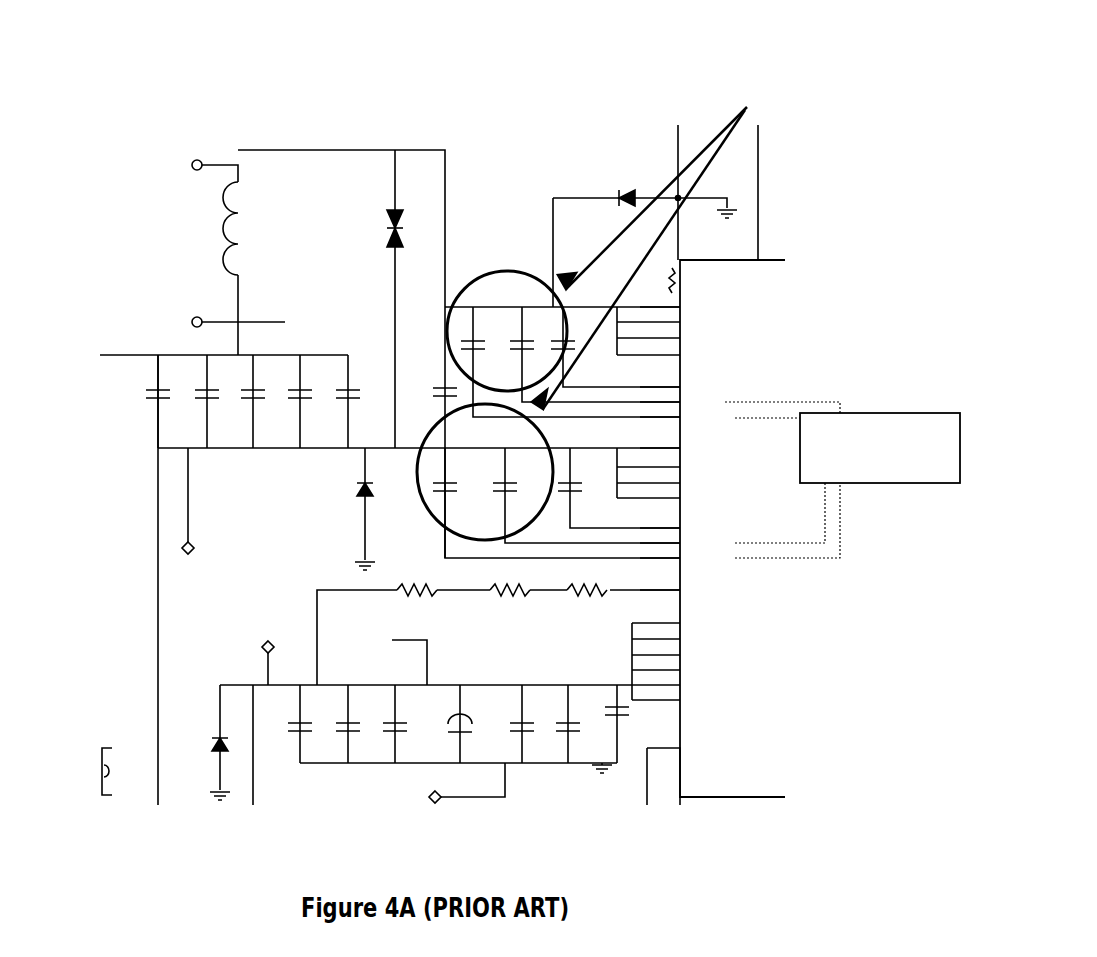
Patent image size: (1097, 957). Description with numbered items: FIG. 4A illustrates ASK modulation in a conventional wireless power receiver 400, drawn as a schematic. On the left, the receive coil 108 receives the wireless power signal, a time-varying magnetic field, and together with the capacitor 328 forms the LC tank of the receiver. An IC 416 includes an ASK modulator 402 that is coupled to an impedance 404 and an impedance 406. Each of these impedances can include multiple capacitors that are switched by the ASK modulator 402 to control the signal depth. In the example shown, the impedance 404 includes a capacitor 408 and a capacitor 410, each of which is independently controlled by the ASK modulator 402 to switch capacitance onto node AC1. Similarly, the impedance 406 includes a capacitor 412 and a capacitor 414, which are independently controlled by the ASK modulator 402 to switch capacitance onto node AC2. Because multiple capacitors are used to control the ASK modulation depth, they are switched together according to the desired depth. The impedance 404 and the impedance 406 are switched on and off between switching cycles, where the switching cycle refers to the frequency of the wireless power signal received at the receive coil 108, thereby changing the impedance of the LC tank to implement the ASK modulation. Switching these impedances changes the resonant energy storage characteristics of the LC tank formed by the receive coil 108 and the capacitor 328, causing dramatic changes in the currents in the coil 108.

The wireless power receiver 400 is at (103, 84).
The receive coil 108 is at (190, 238).
The capacitor 328 is at (195, 410).
The ASK modulator 402 is at (890, 427).
The impedance 404 is at (518, 248).
The impedance 406 is at (498, 623).
The capacitor 408 is at (470, 335).
The capacitor 410 is at (515, 305).
The capacitor 412 is at (430, 490).
The capacitor 414 is at (497, 470).
The IC 416 is at (713, 524).